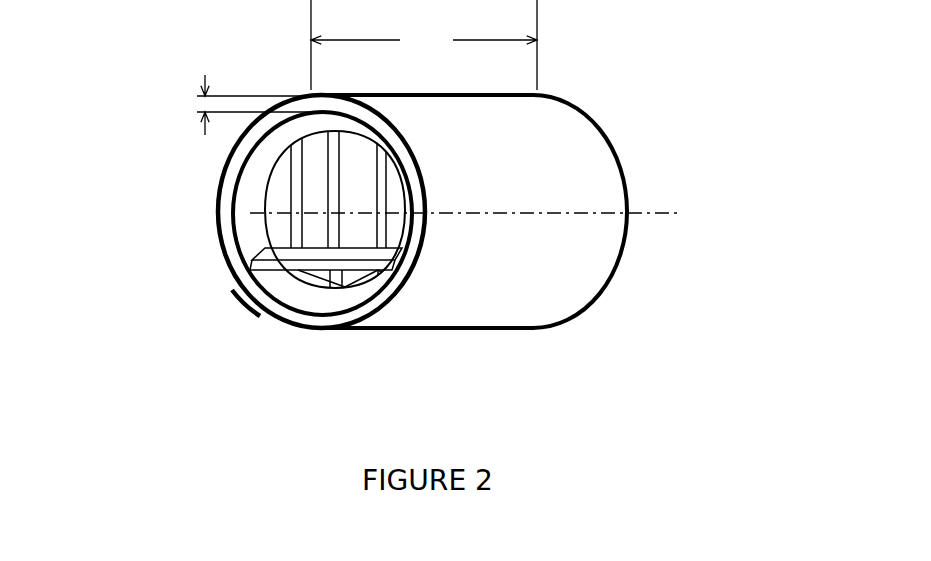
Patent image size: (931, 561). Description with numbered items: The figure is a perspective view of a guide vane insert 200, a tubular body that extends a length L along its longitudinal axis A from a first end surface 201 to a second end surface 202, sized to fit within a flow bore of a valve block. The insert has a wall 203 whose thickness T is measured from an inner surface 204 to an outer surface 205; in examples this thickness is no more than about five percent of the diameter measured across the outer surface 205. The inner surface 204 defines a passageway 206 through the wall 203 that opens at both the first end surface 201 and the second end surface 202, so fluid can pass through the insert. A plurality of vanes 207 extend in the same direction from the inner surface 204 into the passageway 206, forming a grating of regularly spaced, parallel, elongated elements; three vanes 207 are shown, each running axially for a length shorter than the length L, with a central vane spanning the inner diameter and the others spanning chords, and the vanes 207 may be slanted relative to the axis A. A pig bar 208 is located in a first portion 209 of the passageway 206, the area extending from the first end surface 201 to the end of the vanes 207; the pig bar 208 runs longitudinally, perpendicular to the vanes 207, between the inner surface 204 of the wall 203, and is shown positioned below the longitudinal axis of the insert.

The guide vane insert 200 is at (682, 155).
The first end surface 201 is at (344, 338).
The second end surface 202 is at (583, 325).
The wall 203 is at (491, 271).
The inner surface 204 is at (227, 174).
The outer surface 205 is at (208, 198).
The passageway 206 is at (240, 324).
The vanes 207 is at (310, 208).
The pig bar 208 is at (258, 265).
The first portion 209 is at (312, 308).